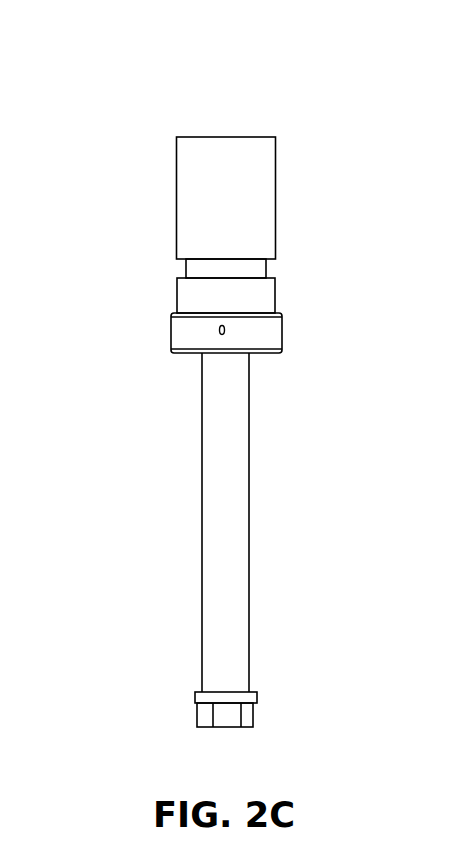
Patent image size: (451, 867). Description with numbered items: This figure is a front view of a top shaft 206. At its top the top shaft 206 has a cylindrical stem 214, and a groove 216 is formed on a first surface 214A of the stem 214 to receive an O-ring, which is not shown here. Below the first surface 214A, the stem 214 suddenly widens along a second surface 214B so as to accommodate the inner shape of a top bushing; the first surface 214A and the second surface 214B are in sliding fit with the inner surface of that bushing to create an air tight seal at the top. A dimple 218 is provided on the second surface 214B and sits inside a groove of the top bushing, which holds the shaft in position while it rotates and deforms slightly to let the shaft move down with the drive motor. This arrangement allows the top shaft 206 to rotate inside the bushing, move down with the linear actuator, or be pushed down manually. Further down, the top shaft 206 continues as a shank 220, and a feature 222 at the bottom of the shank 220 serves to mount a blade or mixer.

The top shaft 206 is at (306, 84).
The cylindrical stem 214 is at (250, 198).
The first surface 214A is at (177, 223).
The second surface 214B is at (178, 327).
The groove 216 is at (260, 272).
The dimple 218 is at (225, 330).
The shank 220 is at (230, 460).
The feature 222 is at (250, 722).